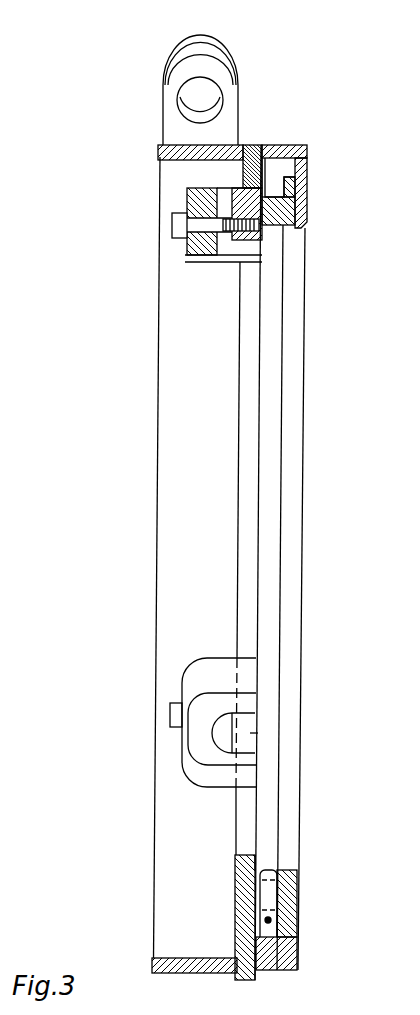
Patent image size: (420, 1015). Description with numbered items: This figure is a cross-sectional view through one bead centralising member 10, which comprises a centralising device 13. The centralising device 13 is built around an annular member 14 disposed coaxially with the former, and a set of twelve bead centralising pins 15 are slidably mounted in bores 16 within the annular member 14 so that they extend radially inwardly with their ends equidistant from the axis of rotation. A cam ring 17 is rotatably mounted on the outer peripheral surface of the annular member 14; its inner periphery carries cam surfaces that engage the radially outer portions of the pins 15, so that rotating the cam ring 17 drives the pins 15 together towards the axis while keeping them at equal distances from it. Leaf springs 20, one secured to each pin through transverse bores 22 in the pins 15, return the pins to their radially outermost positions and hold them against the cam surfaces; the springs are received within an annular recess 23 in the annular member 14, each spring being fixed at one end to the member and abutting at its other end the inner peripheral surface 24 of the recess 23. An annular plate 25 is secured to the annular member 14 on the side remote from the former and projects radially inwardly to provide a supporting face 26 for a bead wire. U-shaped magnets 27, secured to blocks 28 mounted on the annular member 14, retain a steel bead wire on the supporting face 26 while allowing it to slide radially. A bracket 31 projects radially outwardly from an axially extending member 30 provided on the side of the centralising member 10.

The bead centralising member 10 is at (150, 892).
The centralising device 13 is at (305, 532).
The annular member 14 is at (290, 228).
The bead centralising pins 15 is at (270, 870).
The bores 16 is at (308, 153).
The cam ring 17 is at (272, 147).
The leaf springs 20 is at (283, 938).
The transverse bores 22 is at (270, 920).
The annular recess 23 is at (270, 193).
The inner peripheral surface 24 is at (287, 182).
The annular plate 25 is at (237, 875).
The supporting face 26 is at (257, 862).
The U-shaped magnets 27 is at (187, 258).
The blocks 28 is at (250, 733).
The axially extending member 30 is at (168, 505).
The bracket 31 is at (167, 97).